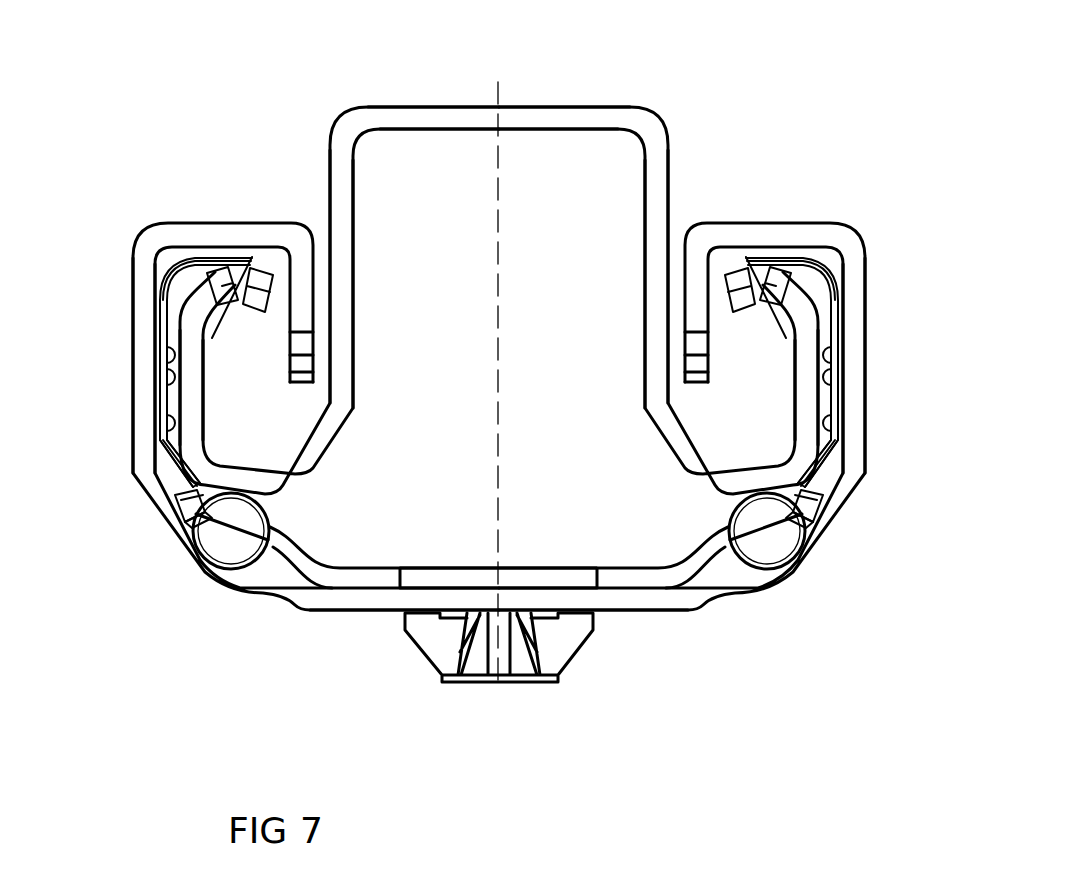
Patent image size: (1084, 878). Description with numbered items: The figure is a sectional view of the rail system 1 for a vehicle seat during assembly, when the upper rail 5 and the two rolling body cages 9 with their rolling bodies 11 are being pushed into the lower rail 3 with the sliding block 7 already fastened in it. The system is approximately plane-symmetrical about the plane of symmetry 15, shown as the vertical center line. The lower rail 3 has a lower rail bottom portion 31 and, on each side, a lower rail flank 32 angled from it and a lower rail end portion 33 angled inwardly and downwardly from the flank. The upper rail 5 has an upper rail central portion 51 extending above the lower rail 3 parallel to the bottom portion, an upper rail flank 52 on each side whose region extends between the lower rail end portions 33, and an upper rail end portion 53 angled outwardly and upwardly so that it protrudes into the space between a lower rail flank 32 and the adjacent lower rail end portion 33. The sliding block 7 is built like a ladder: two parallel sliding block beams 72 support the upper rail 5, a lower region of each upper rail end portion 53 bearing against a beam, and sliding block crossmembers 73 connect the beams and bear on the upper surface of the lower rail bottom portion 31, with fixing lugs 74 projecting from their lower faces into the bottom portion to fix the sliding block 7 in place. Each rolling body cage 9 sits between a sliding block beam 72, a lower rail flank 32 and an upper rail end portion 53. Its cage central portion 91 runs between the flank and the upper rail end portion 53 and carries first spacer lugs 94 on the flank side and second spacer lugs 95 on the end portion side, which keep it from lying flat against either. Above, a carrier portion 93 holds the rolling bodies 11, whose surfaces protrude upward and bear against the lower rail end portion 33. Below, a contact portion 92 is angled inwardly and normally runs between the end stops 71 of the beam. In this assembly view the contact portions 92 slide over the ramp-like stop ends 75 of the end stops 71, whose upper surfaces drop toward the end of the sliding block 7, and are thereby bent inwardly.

The rail system 1 is at (703, 76).
The lower rail 3 is at (666, 611).
The upper rail 5 is at (577, 102).
The sliding block 7 is at (453, 565).
The rolling body cage 9 is at (176, 318).
The rolling body 11 is at (189, 254).
The plane of symmetry 15 is at (495, 84).
The lower rail bottom portion 31 is at (335, 607).
The lower rail flank 32 is at (140, 400).
The lower rail end portion 33 is at (305, 360).
The upper rail central portion 51 is at (396, 117).
The upper rail flank 52 is at (345, 266).
The upper rail end portion 53 is at (195, 383).
The end stop 71 is at (176, 506).
The sliding block beam 72 is at (266, 520).
The sliding block crossmember 73 is at (522, 566).
The fixing lug 74 is at (568, 653).
The ramp-like stop end 75 is at (185, 520).
The cage central portion 91 is at (160, 380).
The contact portion 92 is at (185, 487).
The carrier portion 93 is at (181, 280).
The first spacer lug 94 is at (160, 355).
The second spacer lug 95 is at (160, 425).